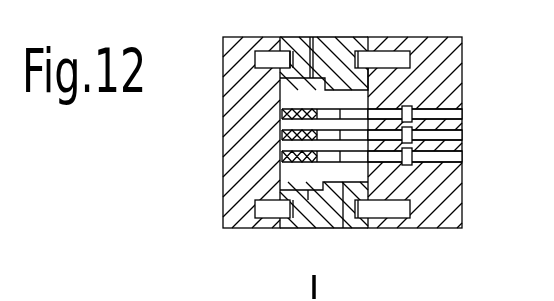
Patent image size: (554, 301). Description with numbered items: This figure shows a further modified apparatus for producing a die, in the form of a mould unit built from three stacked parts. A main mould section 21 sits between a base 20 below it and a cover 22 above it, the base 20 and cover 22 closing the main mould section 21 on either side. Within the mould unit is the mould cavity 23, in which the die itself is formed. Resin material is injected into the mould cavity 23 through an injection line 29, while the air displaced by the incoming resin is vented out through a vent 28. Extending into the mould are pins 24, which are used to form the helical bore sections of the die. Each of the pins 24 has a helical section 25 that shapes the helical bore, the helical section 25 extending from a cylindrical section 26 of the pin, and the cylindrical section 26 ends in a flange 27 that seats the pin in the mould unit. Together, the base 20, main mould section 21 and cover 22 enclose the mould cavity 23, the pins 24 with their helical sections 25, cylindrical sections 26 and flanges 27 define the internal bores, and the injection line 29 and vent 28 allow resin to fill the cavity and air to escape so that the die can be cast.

The base 20 is at (255, 188).
The main mould section 21 is at (326, 212).
The cover 22 is at (436, 189).
The mould cavity 23 is at (308, 184).
The pins 24 is at (171, 105).
The helical section 25 is at (282, 112).
The cylindrical section 26 is at (282, 133).
The flange 27 is at (282, 155).
The vent 28 is at (364, 208).
The injection line 29 is at (310, 43).